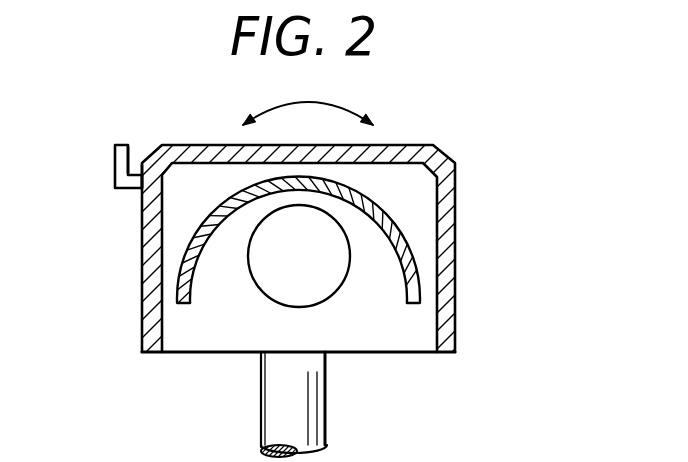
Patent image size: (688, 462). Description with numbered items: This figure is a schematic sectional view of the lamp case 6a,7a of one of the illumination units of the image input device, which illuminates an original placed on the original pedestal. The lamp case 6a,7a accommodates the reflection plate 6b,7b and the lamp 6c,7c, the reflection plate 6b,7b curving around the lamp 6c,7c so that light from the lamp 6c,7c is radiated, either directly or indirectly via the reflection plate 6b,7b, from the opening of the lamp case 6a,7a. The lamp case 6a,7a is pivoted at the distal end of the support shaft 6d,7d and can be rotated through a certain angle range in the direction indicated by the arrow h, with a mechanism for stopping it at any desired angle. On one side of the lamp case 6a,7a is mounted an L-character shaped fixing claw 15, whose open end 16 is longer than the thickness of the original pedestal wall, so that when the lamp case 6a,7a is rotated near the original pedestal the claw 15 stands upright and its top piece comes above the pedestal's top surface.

The lamp case 6a,7a is at (437, 160).
The reflection plate 6b,7b is at (397, 233).
The lamp 6c,7c is at (335, 268).
The support shaft 6d,7d is at (313, 420).
The L-character shaped fixing claw 15 is at (120, 181).
The open end 16 is at (135, 160).
The arrow h is at (308, 103).